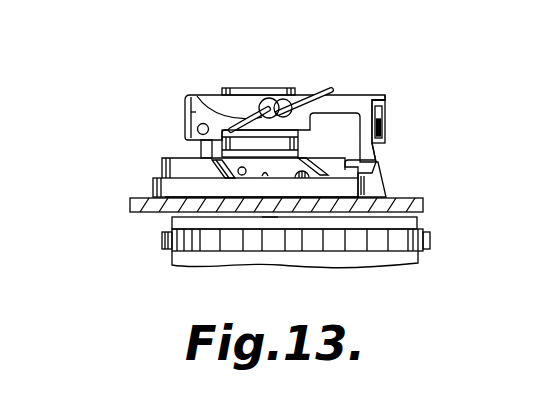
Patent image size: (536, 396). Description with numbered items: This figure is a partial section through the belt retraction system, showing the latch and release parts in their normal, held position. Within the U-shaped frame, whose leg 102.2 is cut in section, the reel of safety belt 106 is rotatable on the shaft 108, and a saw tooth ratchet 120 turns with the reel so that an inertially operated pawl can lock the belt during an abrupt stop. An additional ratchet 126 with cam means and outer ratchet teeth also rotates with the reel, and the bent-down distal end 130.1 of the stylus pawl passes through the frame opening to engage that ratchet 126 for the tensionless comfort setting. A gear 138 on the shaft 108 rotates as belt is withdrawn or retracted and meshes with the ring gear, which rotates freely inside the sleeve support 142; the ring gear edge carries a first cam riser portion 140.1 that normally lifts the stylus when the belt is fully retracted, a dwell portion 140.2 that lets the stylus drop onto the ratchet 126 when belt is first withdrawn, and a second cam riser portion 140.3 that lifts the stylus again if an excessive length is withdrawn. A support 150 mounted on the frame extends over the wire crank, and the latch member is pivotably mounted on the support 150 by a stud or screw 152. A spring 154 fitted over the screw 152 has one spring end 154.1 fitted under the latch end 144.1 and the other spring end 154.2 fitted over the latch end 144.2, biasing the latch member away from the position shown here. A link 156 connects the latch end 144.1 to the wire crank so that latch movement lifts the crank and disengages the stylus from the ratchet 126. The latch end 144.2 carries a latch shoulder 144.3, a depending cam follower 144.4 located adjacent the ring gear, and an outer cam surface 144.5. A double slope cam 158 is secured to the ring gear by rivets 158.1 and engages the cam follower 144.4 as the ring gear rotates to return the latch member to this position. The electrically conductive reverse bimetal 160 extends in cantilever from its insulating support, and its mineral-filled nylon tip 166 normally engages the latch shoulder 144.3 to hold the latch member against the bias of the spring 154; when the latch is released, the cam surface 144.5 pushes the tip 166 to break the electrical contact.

The leg of the U-shaped frame 102.2 is at (131, 199).
The reel of safety belt 106 is at (218, 264).
The shaft 108 is at (270, 216).
The saw tooth ratchet 120 is at (162, 239).
The ratchet 126 is at (172, 221).
The distal end of the stylus 130.1 is at (197, 136).
The gear 138 is at (299, 140).
The first cam riser portion 140.1 is at (218, 158).
The dwell portion 140.2 is at (261, 188).
The second cam riser portion 140.3 is at (295, 157).
The sleeve support 142 is at (150, 185).
The latch end 144.1 is at (190, 94).
The latch end 144.2 is at (347, 93).
The latch shoulder 144.3 is at (386, 94).
The cam follower 144.4 is at (376, 146).
The cam surface 144.5 is at (388, 101).
The support 150 is at (220, 81).
The stud or screw 152 is at (283, 87).
The spring 154 is at (263, 89).
The spring end 154.1 is at (198, 95).
The spring end 154.2 is at (327, 91).
The link 156 is at (197, 123).
The double slope cam 158 is at (376, 190).
The rivets 158.1 is at (375, 162).
The reverse bimetal 160 is at (386, 127).
The tip 166 is at (387, 112).